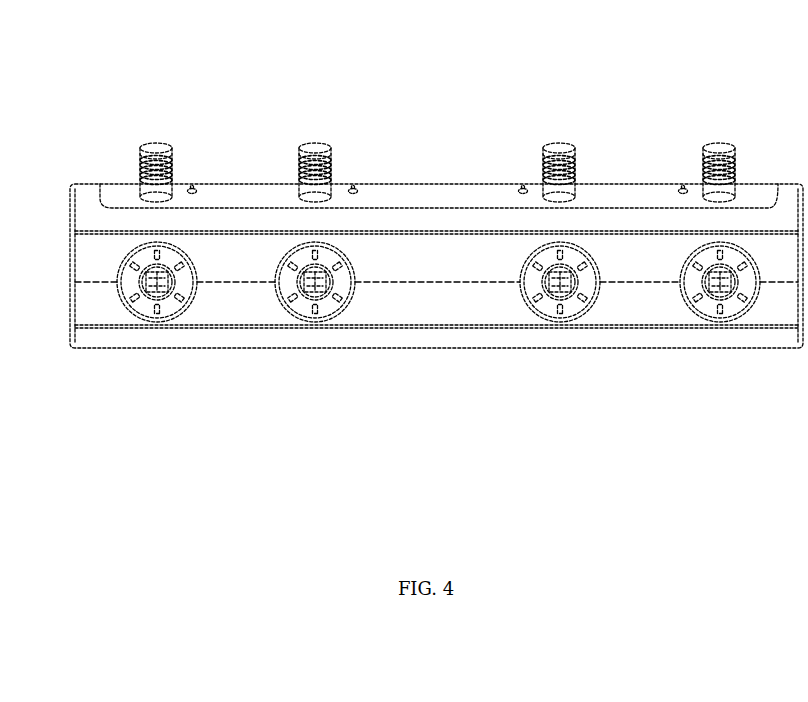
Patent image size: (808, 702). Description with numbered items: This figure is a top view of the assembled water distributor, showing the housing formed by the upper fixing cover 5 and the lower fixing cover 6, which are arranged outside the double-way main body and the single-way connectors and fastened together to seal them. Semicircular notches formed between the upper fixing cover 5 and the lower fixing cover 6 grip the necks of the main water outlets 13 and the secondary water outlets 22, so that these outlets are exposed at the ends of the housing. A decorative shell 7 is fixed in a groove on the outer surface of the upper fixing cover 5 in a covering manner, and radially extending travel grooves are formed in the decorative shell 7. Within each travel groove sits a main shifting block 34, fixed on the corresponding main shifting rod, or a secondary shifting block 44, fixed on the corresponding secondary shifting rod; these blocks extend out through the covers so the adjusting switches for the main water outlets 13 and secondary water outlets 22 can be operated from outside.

The upper fixing plate 5 is at (645, 220).
The lower fixing plate 6 is at (423, 313).
The decorative cover 7 is at (442, 198).
The main water outlet 13 is at (313, 322).
The secondary water outlet 22 is at (155, 322).
The main shifting block 34 is at (311, 146).
The secondary shifting block 44 is at (152, 146).